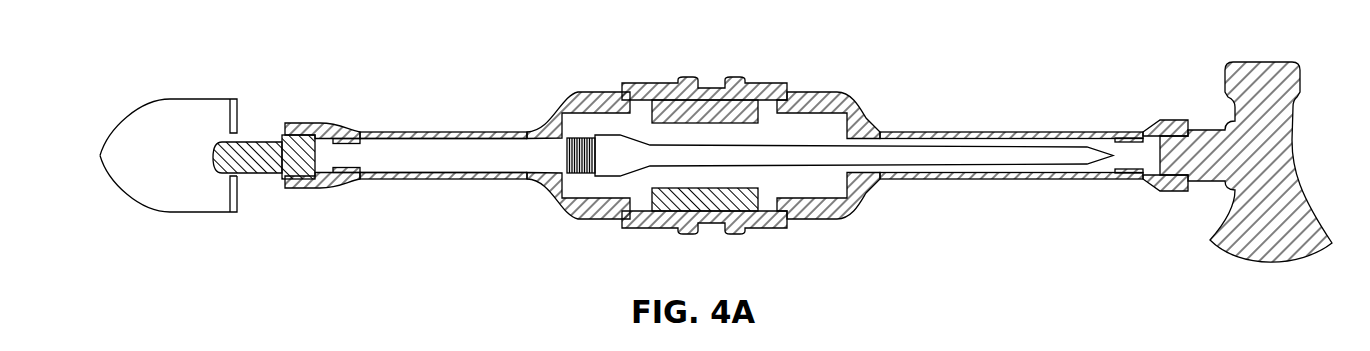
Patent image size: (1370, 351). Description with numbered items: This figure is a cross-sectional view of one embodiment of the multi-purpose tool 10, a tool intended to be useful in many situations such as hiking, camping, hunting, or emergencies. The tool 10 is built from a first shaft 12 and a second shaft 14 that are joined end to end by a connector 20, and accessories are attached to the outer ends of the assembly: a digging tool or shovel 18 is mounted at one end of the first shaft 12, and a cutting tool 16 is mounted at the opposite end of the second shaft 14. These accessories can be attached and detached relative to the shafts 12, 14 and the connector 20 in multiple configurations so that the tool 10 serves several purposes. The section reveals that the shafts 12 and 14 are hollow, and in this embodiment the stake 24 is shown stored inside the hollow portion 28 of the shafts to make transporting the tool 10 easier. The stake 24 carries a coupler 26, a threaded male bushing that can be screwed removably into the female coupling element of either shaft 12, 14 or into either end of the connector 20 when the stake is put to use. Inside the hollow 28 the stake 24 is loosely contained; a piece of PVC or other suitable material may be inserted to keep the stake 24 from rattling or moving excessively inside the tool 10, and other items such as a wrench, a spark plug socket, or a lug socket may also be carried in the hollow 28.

The multi-purpose tool 10 is at (305, 82).
The first shaft 12 is at (390, 132).
The second shaft 14 is at (999, 130).
The cutting tool 16 is at (1290, 203).
The digging tool or shovel 18 is at (187, 117).
The connector 20 is at (715, 72).
The stake 24 is at (972, 157).
The coupler 26 is at (563, 167).
The hollow portion 28 is at (453, 152).